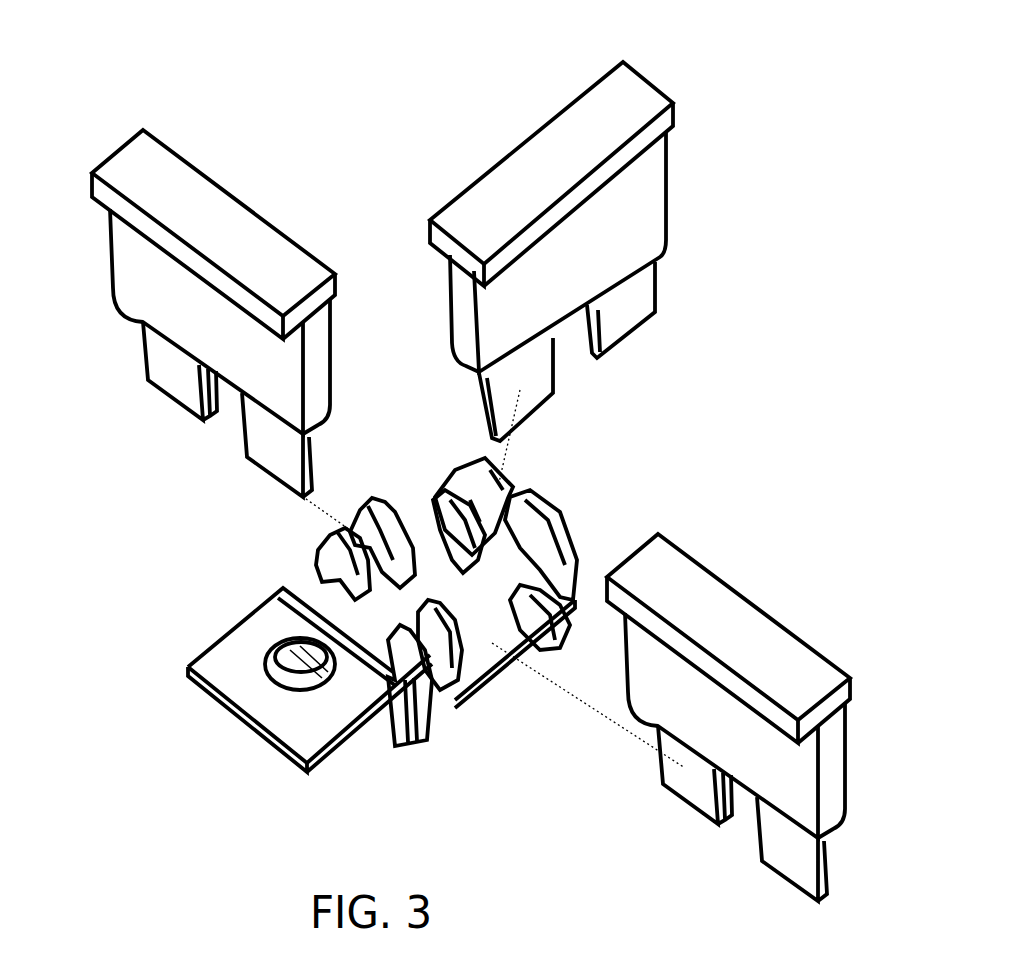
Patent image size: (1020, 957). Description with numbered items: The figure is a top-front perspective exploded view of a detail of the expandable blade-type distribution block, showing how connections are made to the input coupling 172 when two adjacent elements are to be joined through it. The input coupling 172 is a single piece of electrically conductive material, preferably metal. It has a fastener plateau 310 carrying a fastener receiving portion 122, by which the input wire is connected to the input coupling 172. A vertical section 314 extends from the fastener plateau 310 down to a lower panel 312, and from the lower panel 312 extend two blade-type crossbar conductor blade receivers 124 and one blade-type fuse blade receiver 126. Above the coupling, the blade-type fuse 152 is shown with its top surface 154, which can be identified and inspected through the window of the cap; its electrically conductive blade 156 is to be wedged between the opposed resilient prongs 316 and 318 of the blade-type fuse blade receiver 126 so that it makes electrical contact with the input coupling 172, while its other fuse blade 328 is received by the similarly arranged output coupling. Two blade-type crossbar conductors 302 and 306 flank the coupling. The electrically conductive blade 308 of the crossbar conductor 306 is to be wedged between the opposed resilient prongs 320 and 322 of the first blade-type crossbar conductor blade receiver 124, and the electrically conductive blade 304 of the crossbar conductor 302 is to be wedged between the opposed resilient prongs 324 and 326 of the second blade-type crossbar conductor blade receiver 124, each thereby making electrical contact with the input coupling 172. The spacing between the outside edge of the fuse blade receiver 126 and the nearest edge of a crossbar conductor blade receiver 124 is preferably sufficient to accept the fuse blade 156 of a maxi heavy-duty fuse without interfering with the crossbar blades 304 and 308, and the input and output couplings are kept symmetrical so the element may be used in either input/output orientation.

The fastener receiving portion 122 is at (275, 688).
The blade-type crossbar conductor blade receiver 124 is at (320, 541).
The blade-type fuse blade receiver 126 is at (522, 487).
The fuse 152 is at (584, 224).
The top surface 154 is at (566, 150).
The electrically conductive blade 156 is at (550, 393).
The input coupling 172 is at (335, 711).
The blade-type crossbar conductor 302 is at (191, 303).
The electrically conductive blade 304 is at (262, 472).
The blade-type crossbar conductor 306 is at (666, 712).
The electrically conductive blade 308 is at (687, 807).
The fastener plateau 310 is at (360, 606).
The lower panel 312 is at (428, 540).
The vertical section 314 is at (420, 742).
The resilient prong 316 is at (552, 547).
The resilient prong 318 is at (450, 485).
The resilient prong 320 is at (453, 705).
The resilient prong 322 is at (543, 625).
The resilient prong 324 is at (320, 573).
The resilient prong 326 is at (360, 525).
The fuse blade 328 is at (633, 297).